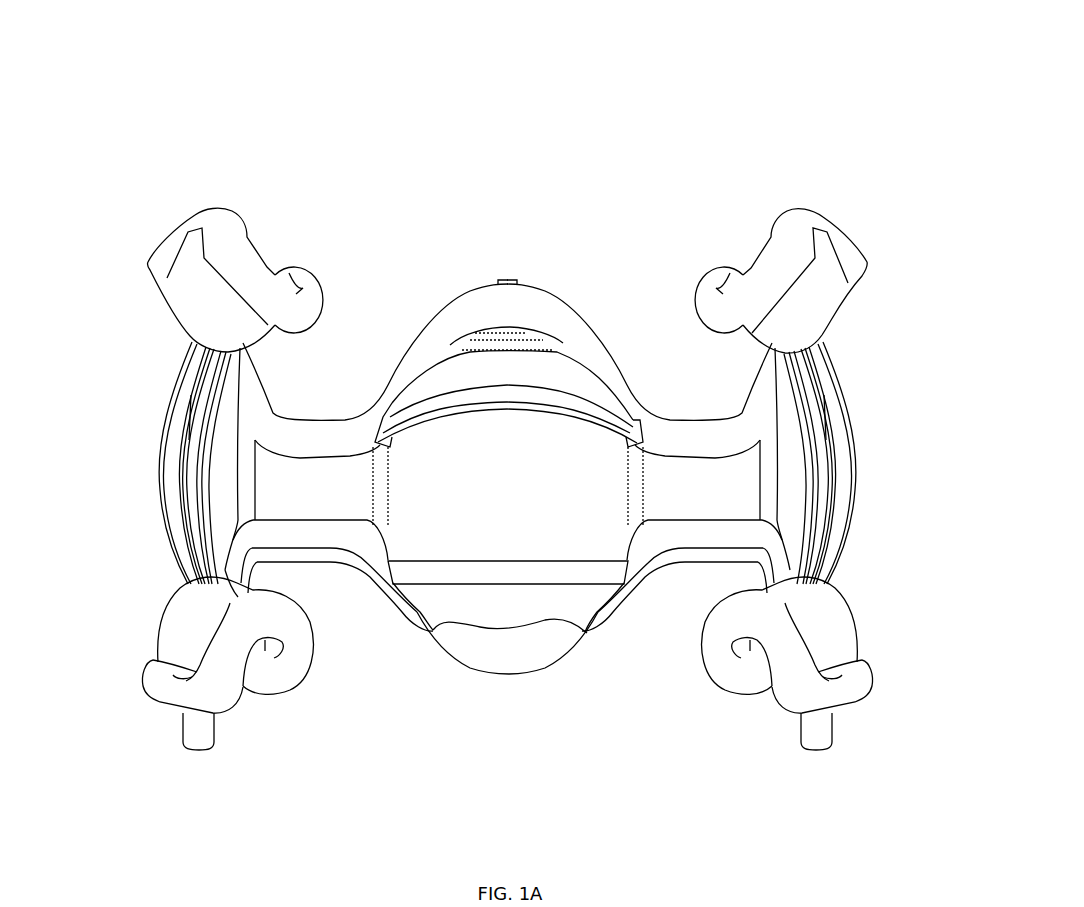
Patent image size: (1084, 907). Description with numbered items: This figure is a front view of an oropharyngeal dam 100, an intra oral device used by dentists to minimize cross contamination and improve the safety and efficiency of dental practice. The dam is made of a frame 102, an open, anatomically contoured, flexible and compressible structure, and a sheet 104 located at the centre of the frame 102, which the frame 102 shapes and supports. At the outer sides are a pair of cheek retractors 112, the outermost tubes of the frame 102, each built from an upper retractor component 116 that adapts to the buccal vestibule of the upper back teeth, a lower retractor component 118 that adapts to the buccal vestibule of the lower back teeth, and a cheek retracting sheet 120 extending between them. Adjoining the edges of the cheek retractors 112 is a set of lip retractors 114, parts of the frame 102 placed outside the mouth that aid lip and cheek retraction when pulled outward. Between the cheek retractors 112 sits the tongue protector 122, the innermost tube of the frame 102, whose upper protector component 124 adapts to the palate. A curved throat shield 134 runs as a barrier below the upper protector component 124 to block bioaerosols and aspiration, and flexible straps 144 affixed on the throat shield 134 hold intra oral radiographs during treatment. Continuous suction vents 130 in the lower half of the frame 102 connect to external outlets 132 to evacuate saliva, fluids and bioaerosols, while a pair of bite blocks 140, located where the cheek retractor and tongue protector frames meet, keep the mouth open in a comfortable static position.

The oropharyngeal dam 100 is at (713, 128).
The frame 102 is at (255, 387).
The sheet 104 is at (332, 500).
The pair of cheek retractors 112 is at (833, 440).
The set of lip retractors 114 is at (690, 288).
The upper retractor component 116 is at (185, 294).
The lower retractor component 118 is at (182, 625).
The cheek retracting sheet 120 is at (213, 438).
The tongue protector 122 is at (560, 490).
The upper protector component 124 is at (515, 305).
The suction vents 130 is at (248, 553).
The external outlets 132 is at (812, 734).
The throat shield 134 is at (482, 510).
The pair of bite blocks 140 is at (718, 495).
The flexible straps 144 is at (528, 572).